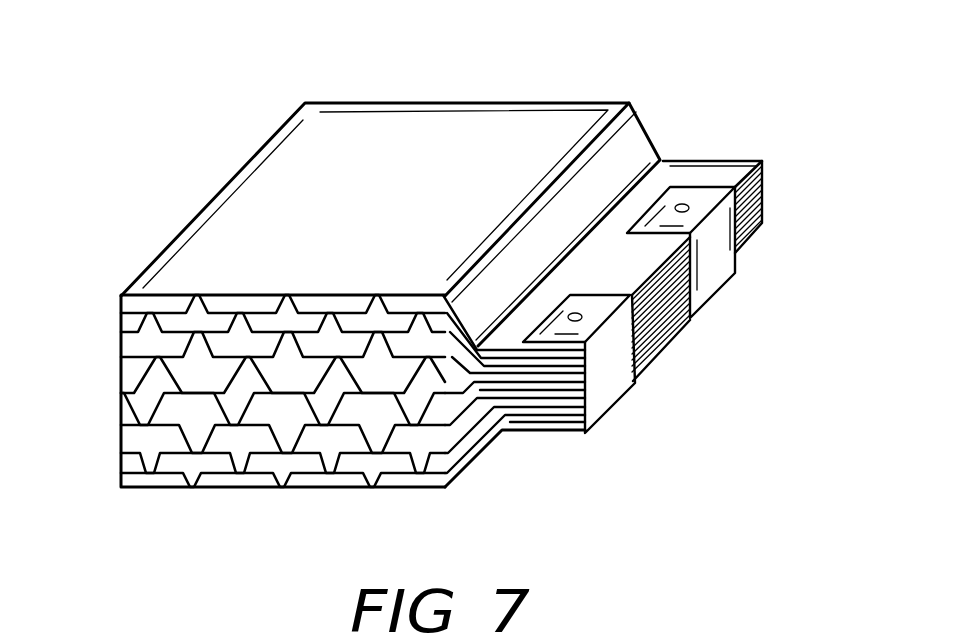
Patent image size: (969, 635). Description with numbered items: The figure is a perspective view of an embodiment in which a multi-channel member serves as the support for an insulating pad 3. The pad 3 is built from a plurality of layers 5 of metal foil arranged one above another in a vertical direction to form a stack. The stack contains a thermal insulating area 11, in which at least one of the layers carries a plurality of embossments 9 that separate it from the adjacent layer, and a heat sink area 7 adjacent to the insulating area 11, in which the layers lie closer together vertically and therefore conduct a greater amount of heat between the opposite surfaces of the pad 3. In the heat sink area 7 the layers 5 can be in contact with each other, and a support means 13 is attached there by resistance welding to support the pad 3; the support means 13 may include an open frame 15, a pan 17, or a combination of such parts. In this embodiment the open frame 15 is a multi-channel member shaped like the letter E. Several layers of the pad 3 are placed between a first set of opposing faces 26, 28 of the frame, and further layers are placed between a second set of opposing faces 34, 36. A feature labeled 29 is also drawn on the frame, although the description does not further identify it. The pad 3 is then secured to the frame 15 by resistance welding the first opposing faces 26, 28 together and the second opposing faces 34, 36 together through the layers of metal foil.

The insulating pad 3 is at (457, 101).
The layers 5 is at (118, 297).
The heat sink area 7 is at (773, 160).
The embossments 9 is at (196, 345).
The thermal insulating area 11 is at (328, 207).
The support means 13 is at (736, 275).
The open frame 15 is at (625, 340).
The pan 17 is at (464, 472).
The first opposing face 26 is at (590, 352).
The first opposing face 28 is at (588, 390).
The terminal hole 29 is at (682, 204).
The second opposing face 34 is at (542, 378).
The second opposing face 36 is at (573, 400).